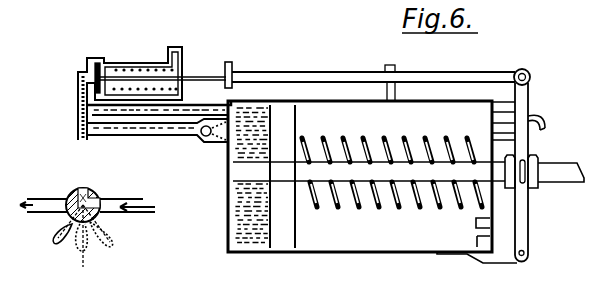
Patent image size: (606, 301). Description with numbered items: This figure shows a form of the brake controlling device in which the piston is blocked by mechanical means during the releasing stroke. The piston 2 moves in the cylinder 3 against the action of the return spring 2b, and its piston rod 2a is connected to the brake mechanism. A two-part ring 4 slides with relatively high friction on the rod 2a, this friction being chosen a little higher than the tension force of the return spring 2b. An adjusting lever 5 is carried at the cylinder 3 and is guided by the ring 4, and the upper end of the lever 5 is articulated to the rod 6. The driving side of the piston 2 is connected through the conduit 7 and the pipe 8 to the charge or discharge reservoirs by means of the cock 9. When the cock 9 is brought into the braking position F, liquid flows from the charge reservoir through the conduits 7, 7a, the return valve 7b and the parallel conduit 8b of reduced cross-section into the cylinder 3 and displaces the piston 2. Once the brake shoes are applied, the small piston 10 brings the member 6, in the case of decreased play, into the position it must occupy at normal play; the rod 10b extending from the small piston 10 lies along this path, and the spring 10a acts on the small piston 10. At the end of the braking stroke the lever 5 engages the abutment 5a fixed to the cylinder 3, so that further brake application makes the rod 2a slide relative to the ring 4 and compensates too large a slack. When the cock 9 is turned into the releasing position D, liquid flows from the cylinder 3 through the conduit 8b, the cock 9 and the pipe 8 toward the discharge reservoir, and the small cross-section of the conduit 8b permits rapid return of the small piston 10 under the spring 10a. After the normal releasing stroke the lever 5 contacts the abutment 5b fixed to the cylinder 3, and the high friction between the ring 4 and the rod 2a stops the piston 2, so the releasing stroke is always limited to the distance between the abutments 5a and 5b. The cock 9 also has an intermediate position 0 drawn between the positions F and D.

The piston 2 is at (278, 188).
The piston rod 2a is at (557, 178).
The return spring 2b is at (360, 211).
The cylinder 3 is at (247, 243).
The ring 4 is at (540, 158).
The adjusting lever 5 is at (524, 94).
The abutment 5a is at (546, 130).
The abutment 5b is at (503, 138).
The rod 6 is at (437, 72).
The conduit 7 is at (128, 213).
The conduit 7a is at (136, 134).
The return valve 7b is at (201, 144).
The pipe 8 is at (66, 204).
The parallel conduit 8b is at (170, 112).
The cock 9 is at (80, 223).
The small piston 10 is at (101, 57).
The spring 10a is at (130, 68).
The rod 10b is at (188, 77).
The braking position F is at (57, 240).
The spray position 0 is at (82, 244).
The releasing position D is at (113, 238).